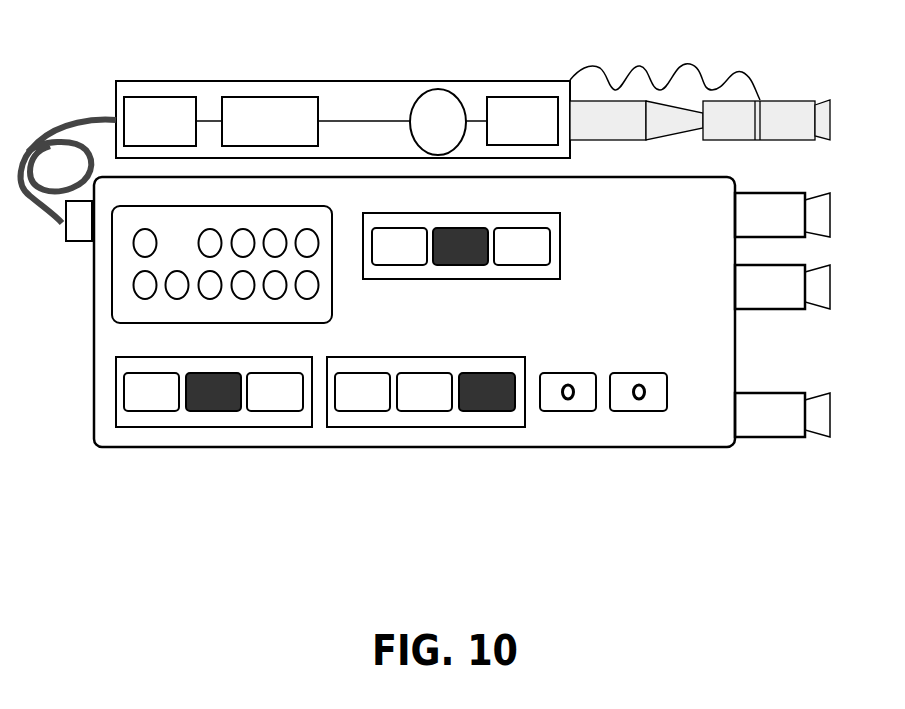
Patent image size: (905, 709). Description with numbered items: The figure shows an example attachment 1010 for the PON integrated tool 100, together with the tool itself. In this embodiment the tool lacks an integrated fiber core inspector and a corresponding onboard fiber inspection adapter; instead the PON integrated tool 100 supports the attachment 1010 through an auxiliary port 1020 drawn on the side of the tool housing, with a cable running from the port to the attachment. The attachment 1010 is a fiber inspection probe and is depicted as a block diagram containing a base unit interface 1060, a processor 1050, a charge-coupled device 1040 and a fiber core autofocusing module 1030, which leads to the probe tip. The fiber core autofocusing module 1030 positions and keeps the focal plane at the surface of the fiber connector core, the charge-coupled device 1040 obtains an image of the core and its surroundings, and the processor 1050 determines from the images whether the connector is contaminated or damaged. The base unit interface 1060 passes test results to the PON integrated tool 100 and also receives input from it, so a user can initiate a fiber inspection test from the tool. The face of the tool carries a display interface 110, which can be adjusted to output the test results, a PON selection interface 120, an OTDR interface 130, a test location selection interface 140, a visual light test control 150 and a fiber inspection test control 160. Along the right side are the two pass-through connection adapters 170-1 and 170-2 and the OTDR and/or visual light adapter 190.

The PON integrated tool 100 is at (163, 496).
The display interface 110 is at (333, 306).
The PON selection interface 120 is at (563, 243).
The OTDR interface 130 is at (310, 428).
The test location selection interface 140 is at (525, 427).
The visual light test control 150 is at (591, 411).
The fiber inspection test control 160 is at (660, 411).
The pass-through connection adapter 170-1 is at (782, 215).
The pass-through connection adapter 170-2 is at (782, 287).
The OTDR and/or visual light adapter 190 is at (782, 415).
The attachment 1010 is at (416, 60).
The auxiliary port 1020 is at (80, 245).
The fiber core autofocusing module 1030 is at (812, 70).
The charge-coupled device 1040 is at (57, 82).
The processor 1050 is at (270, 121).
The base unit interface 1060 is at (160, 121).